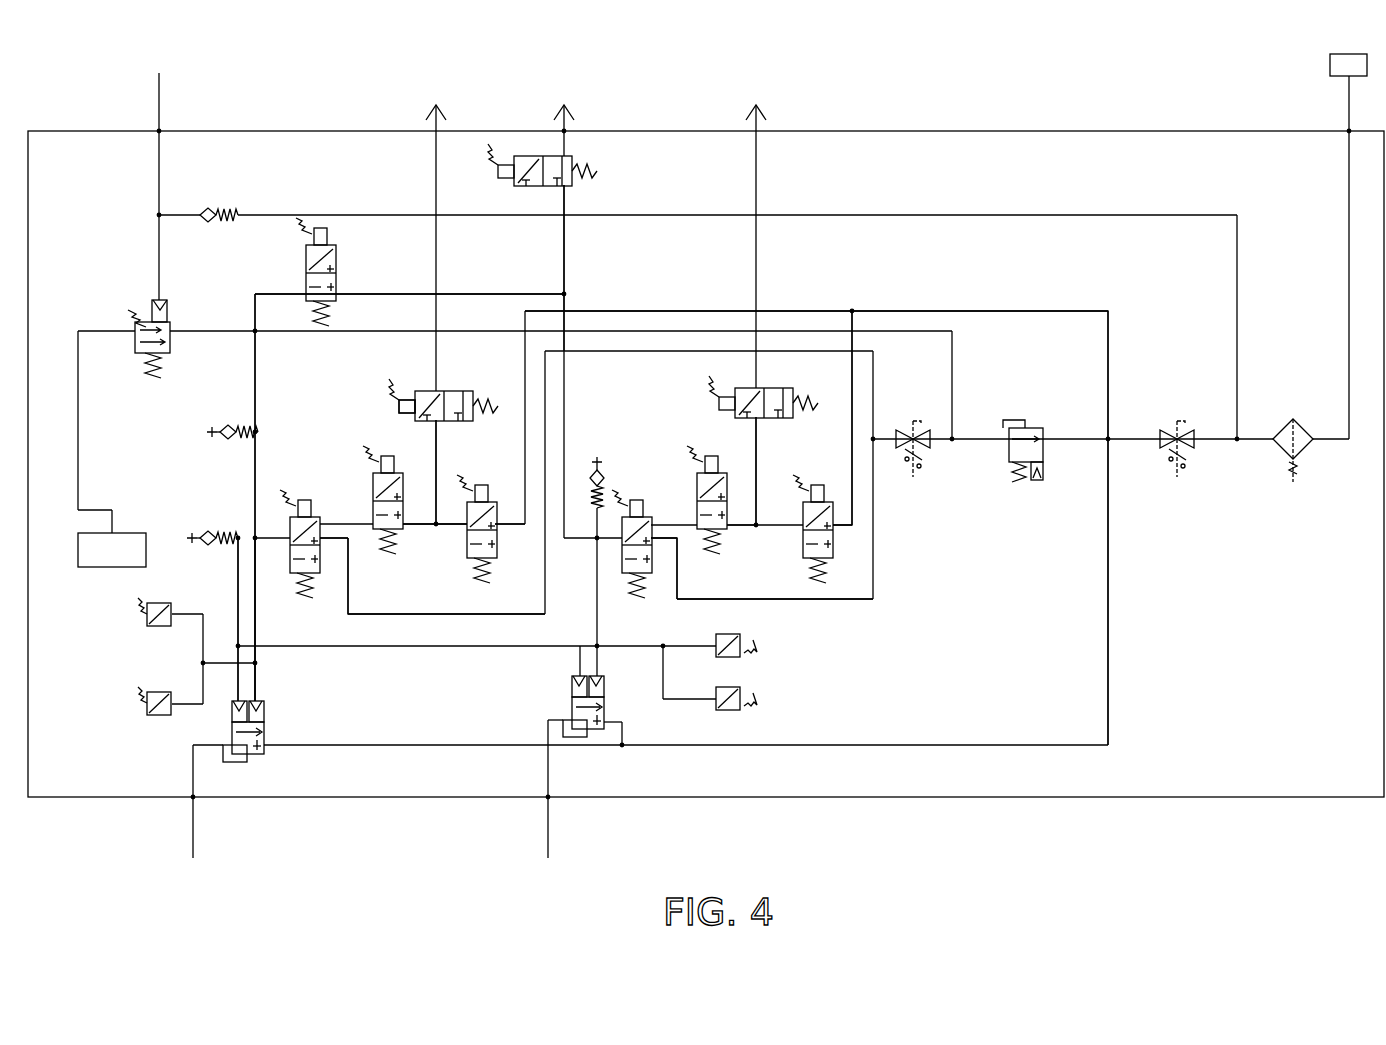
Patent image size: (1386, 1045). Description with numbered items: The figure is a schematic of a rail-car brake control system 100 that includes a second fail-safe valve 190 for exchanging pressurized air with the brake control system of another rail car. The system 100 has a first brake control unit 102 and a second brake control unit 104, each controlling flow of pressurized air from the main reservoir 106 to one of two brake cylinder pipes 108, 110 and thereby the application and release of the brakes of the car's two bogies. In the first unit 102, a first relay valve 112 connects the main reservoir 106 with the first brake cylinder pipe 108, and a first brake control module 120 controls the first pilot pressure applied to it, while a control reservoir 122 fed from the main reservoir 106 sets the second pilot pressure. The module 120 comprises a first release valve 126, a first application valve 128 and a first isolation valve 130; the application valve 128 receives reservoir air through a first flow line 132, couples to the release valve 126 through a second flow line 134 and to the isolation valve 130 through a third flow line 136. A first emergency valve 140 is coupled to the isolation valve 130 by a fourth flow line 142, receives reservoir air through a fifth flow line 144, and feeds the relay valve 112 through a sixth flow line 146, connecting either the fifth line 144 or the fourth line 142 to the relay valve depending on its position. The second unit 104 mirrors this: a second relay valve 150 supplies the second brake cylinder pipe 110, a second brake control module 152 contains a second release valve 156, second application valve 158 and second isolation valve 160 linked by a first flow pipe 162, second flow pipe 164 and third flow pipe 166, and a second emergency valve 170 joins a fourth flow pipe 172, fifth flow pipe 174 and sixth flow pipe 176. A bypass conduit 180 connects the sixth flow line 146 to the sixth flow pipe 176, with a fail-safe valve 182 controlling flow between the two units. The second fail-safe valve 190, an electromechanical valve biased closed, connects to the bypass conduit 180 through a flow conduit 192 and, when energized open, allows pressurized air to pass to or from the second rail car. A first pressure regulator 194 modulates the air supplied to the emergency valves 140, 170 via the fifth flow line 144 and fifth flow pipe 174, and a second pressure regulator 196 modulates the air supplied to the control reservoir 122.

The brake control system 100 is at (104, 88).
The first brake control unit 102 is at (810, 616).
The second brake control unit 104 is at (296, 422).
The main reservoir 106 is at (1328, 70).
The first brake cylinder pipe 108 is at (547, 822).
The second brake cylinder pipe 110 is at (193, 823).
The first relay valve 112 is at (598, 735).
The first brake control module 120 is at (850, 560).
The control reservoir 122 is at (100, 568).
The first release valve 126 is at (778, 388).
The first application valve 128 is at (853, 532).
The first isolation valve 130 is at (697, 486).
The first flow line 132 is at (853, 393).
The second flow line 134 is at (755, 446).
The third flow line 136 is at (740, 528).
The first emergency valve 140 is at (653, 590).
The fourth flow line 142 is at (662, 523).
The fifth flow line 144 is at (852, 600).
The sixth flow line 146 is at (593, 607).
The second relay valve 150 is at (258, 768).
The second brake control module 152 is at (456, 384).
The second release valve 156 is at (408, 398).
The second application valve 158 is at (465, 540).
The second isolation valve 160 is at (372, 490).
The first flow pipe 162 is at (515, 527).
The second flow pipe 164 is at (440, 462).
The third flow pipe 166 is at (422, 527).
The second emergency valve 170 is at (290, 535).
The fourth flow pipe 172 is at (328, 518).
The fifth flow pipe 174 is at (385, 614).
The sixth flow pipe 176 is at (250, 559).
The bypass conduit 180 is at (388, 294).
The fail-safe valve 182 is at (310, 244).
The second fail-safe valve 190 is at (553, 156).
The flow conduit 192 is at (566, 255).
The first pressure regulator 194 is at (1043, 452).
The second pressure regulator 196 is at (137, 347).